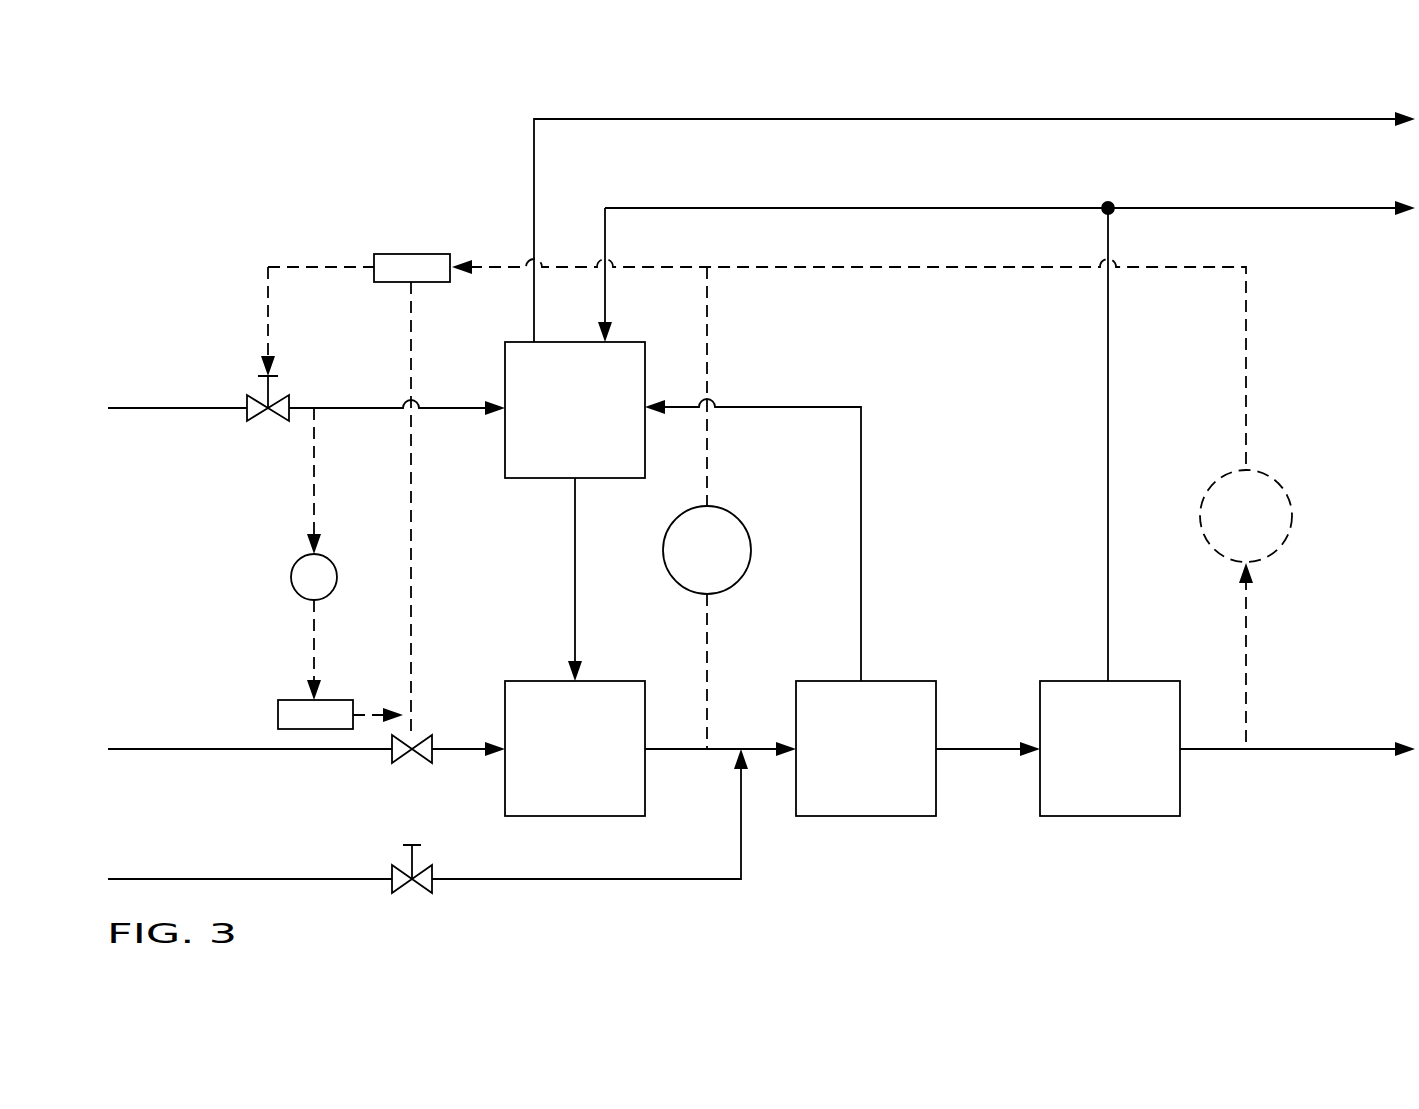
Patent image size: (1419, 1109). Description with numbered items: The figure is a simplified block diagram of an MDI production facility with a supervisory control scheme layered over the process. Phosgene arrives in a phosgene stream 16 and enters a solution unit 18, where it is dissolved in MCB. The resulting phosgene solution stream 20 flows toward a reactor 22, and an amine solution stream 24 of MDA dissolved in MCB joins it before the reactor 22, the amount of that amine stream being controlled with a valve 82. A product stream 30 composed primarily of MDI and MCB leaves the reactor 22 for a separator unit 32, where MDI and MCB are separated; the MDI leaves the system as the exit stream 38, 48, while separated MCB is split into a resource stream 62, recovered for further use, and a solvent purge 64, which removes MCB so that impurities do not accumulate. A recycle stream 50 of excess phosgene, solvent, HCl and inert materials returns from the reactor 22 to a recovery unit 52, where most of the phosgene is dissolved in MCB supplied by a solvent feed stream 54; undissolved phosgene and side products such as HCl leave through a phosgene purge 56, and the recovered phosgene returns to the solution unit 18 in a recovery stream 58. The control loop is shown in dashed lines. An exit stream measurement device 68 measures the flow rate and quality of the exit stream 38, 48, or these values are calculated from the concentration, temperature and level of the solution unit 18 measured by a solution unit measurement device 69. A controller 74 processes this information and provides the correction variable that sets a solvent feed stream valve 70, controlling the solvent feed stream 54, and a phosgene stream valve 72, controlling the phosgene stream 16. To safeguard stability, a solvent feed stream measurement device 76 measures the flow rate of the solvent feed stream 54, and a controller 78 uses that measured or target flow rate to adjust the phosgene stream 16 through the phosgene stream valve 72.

The phosgene stream 16 is at (272, 749).
The solution unit 18 is at (575, 748).
The phosgene solution stream 20 is at (725, 749).
The reactor 22 is at (866, 748).
The amine solution stream 24 is at (741, 858).
The product stream 30 is at (962, 749).
The separator unit 32 is at (1110, 748).
The first exit stream 38 is at (1297, 763).
The third exit stream 48 is at (1308, 749).
The recycle stream 50 is at (861, 527).
The recovery unit 52 is at (575, 410).
The solvent feed stream 54 is at (207, 408).
The phosgene purge 56 is at (1055, 119).
The recovery stream 58 is at (573, 582).
The resource stream 62 is at (938, 208).
The solvent purge 64 is at (1158, 207).
The exit stream measurement device 68 is at (1277, 483).
The solution unit measurement device 69 is at (747, 527).
The solvent feed stream valve 70 is at (289, 398).
The phosgene stream valve 72 is at (417, 763).
The controller 74 is at (405, 254).
The solvent feed stream measurement device 76 is at (290, 573).
The controller 78 is at (295, 700).
The valve 82 is at (432, 866).